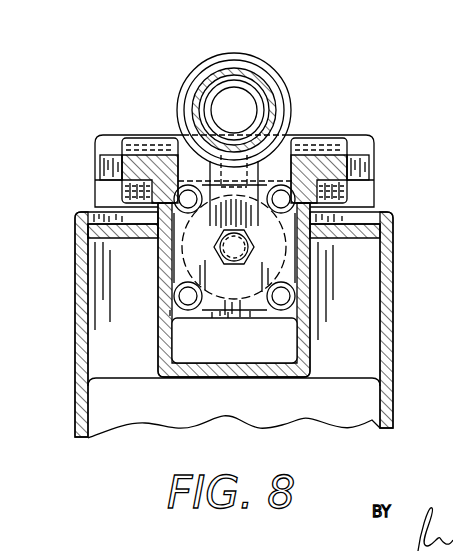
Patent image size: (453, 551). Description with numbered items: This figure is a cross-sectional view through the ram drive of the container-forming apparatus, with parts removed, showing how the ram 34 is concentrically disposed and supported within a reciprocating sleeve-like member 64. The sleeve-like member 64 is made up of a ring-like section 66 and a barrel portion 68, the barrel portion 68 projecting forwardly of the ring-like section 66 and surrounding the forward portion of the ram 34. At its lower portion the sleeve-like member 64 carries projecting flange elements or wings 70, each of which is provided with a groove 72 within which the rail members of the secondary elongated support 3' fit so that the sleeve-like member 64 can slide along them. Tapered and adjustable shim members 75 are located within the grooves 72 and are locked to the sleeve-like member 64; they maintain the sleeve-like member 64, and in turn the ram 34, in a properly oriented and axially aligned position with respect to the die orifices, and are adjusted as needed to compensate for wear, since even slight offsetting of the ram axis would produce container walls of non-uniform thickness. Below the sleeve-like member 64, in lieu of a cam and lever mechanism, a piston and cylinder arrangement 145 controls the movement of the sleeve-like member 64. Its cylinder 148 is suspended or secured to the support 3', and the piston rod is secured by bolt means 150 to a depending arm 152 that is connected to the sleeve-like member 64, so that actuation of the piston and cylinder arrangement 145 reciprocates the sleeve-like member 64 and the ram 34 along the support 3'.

The secondary elongated support 3' is at (202, 325).
The ram 34 is at (262, 128).
The sleeve-like member 64 is at (287, 22).
The ring-like section 66 is at (277, 88).
The barrel portion 68 is at (262, 82).
The wings 70 is at (100, 152).
The grooves 72 is at (112, 135).
The shim members 75 is at (160, 138).
The piston and cylinder arrangement 145 is at (201, 228).
The cylinder 148 is at (270, 262).
The bolt means 150 is at (216, 258).
The depending arm 152 is at (287, 246).